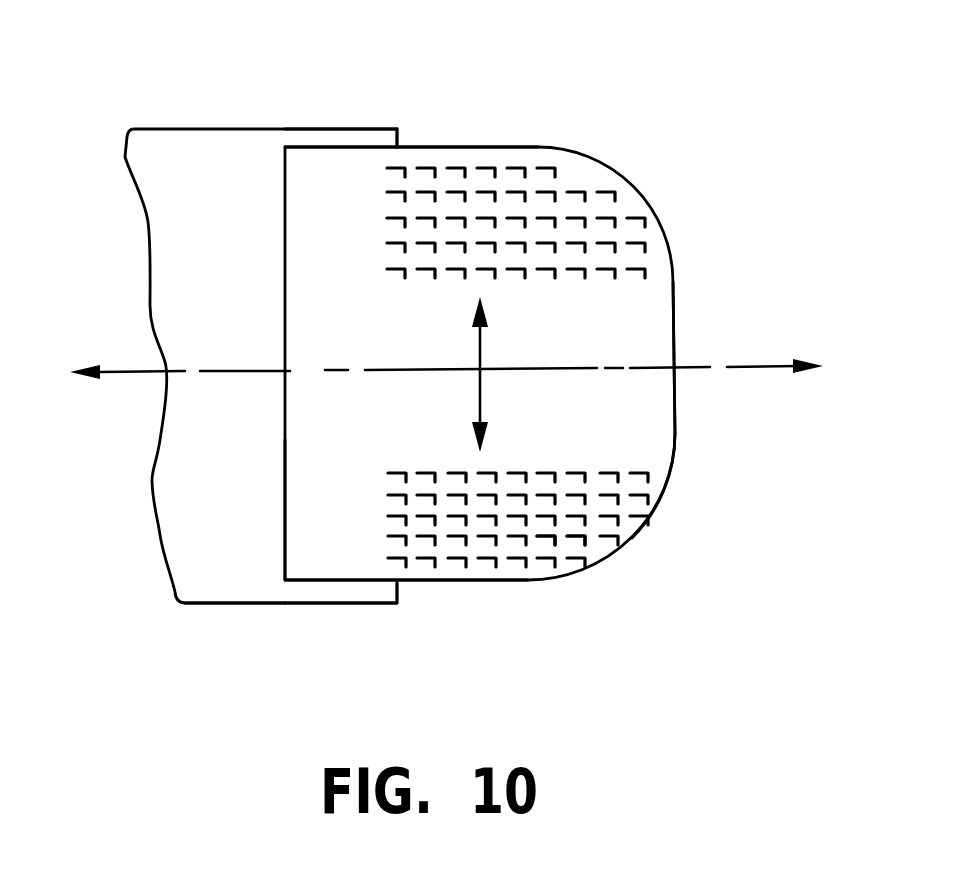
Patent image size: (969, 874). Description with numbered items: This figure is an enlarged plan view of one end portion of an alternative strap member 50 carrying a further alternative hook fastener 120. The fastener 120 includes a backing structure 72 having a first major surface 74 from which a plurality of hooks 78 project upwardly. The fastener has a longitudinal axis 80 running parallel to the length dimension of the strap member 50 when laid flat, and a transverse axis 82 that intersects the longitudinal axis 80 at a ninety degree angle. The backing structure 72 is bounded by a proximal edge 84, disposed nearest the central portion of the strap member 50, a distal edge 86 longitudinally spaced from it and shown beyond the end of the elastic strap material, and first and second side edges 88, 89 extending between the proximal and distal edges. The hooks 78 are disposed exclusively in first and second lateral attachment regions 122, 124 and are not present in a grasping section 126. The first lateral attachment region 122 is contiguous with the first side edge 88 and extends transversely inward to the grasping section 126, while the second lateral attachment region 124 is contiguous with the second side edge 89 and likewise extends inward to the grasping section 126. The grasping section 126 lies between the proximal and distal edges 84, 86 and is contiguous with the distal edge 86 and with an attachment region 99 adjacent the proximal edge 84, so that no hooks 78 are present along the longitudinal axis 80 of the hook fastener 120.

The strap member 50 is at (108, 147).
The hook fastener 120 is at (337, 147).
The first major surface 74 is at (353, 547).
The proximal edge 84 is at (285, 552).
The backing structure 72 is at (323, 440).
The attachment region 99 is at (315, 501).
The first side edge 88 is at (500, 146).
The second side edge 89 is at (468, 582).
The distal edge 86 is at (680, 295).
The grasping section 126 is at (620, 420).
The first lateral attachment region 122 is at (613, 227).
The second lateral attachment region 124 is at (608, 520).
The hooks 78 is at (583, 535).
The longitudinal axis 80 is at (758, 363).
The transverse axis 82 is at (473, 350).